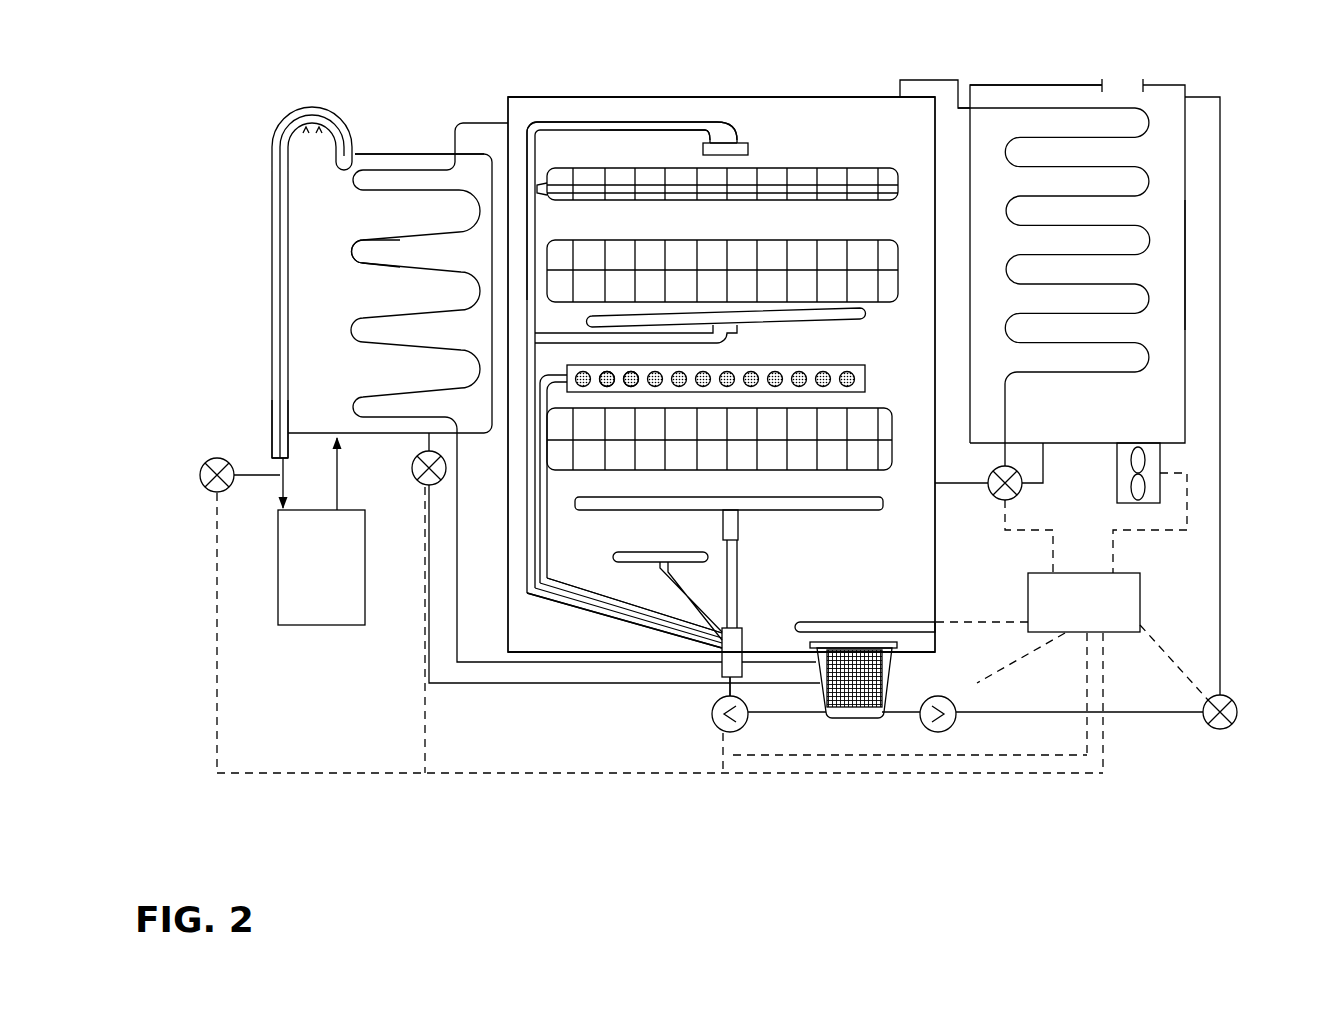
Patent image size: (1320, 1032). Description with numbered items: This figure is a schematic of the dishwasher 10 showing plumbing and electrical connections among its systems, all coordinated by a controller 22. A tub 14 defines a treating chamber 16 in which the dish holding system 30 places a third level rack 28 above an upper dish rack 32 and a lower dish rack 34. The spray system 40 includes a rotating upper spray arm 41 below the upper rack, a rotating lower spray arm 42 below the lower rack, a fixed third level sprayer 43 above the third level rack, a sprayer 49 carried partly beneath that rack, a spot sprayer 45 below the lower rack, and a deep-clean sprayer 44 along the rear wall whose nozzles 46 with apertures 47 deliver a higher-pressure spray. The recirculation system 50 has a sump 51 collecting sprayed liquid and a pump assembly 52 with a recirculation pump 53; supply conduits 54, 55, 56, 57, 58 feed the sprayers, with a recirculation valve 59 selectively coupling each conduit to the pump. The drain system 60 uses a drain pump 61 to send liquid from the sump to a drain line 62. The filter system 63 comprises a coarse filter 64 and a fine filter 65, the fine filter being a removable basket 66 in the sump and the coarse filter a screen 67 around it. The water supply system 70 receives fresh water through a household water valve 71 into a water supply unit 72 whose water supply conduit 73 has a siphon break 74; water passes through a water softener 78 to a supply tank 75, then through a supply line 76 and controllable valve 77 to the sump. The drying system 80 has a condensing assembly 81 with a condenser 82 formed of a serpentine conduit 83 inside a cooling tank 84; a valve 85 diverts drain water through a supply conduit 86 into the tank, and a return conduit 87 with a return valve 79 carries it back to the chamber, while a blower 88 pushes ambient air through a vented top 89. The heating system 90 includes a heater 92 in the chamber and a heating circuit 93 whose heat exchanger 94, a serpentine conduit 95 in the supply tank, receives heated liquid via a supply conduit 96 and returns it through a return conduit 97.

The dishwasher 10 is at (1237, 53).
The tub 14 is at (570, 93).
The treating chamber 16 is at (817, 107).
The controller 22 is at (1142, 600).
The third level rack 28 is at (876, 167).
The dish holding system 30 is at (545, 142).
The upper dish rack 32 is at (845, 240).
The lower dish rack 34 is at (552, 470).
The spray system 40 is at (748, 130).
The upper spray arm 41 is at (805, 312).
The lower spray arm 42 is at (590, 506).
The third level sprayer 43 is at (707, 125).
The deep-clean sprayer 44 is at (742, 362).
The spot sprayer 45 is at (655, 562).
The nozzles 46 is at (600, 374).
The apertures 47 is at (632, 376).
The sprayer 49 is at (832, 183).
The recirculation system 50 is at (694, 716).
The sump 51 is at (762, 644).
The pump assembly 52 is at (750, 740).
The recirculation pump 53 is at (709, 735).
The supply conduit 54 is at (535, 600).
The supply conduit 55 is at (527, 565).
The supply conduit 56 is at (527, 117).
The supply conduit 57 is at (690, 600).
The supply conduit 58 is at (740, 582).
The recirculation valve 59 is at (722, 668).
The drain system 60 is at (983, 734).
The drain pump 61 is at (940, 734).
The drain line 62 is at (1143, 714).
The filter system 63 is at (891, 727).
The coarse filter 64 is at (809, 661).
The fine filter 65 is at (843, 657).
The removable basket 66 is at (838, 726).
The screen 67 is at (815, 686).
The water supply system 70 is at (253, 423).
The household water valve 71 is at (200, 477).
The water supply unit 72 is at (330, 89).
The water supply conduit 73 is at (250, 472).
The siphon break 74 is at (278, 121).
The supply tank 75 is at (380, 153).
The supply line 76 is at (427, 540).
The controllable valve 77 is at (412, 470).
The water softener 78 is at (300, 627).
The return valve 79 is at (1022, 490).
The drying system 80 is at (993, 78).
The condensing assembly 81 is at (1025, 82).
The condenser 82 is at (1063, 82).
The serpentine conduit 83 is at (1152, 240).
The cooling tank 84 is at (1191, 264).
The valve 85 is at (1238, 710).
The supply conduit 86 is at (1222, 510).
The return conduit 87 is at (960, 490).
The blower 88 is at (1160, 458).
The vented top 89 is at (1128, 84).
The heating system 90 is at (923, 643).
The heater 92 is at (815, 624).
The heating circuit 93 is at (393, 104).
The heat exchanger 94 is at (432, 153).
The serpentine conduit 95 is at (353, 250).
The supply conduit 96 is at (458, 123).
The return conduit 97 is at (460, 483).